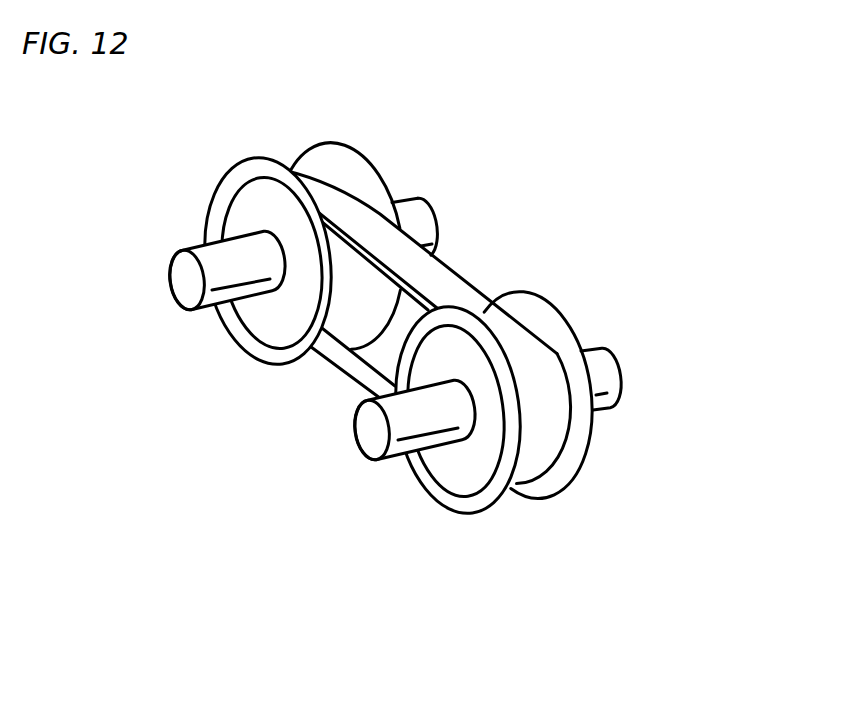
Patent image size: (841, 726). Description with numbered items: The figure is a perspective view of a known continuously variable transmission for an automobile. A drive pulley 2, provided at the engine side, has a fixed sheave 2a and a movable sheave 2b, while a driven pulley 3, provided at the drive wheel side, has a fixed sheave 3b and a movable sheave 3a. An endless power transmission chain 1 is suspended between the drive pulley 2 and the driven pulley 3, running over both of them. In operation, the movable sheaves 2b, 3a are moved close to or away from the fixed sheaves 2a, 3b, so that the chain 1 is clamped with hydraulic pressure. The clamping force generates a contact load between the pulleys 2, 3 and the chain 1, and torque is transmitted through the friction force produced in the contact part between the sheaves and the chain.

The endless power transmission chain 1 is at (450, 270).
The drive pulley 2 is at (494, 403).
The fixed sheave 2a is at (543, 312).
The movable sheave 2b is at (440, 468).
The driven pulley 3 is at (304, 254).
The movable sheave 3a is at (333, 160).
The fixed sheave 3b is at (260, 320).